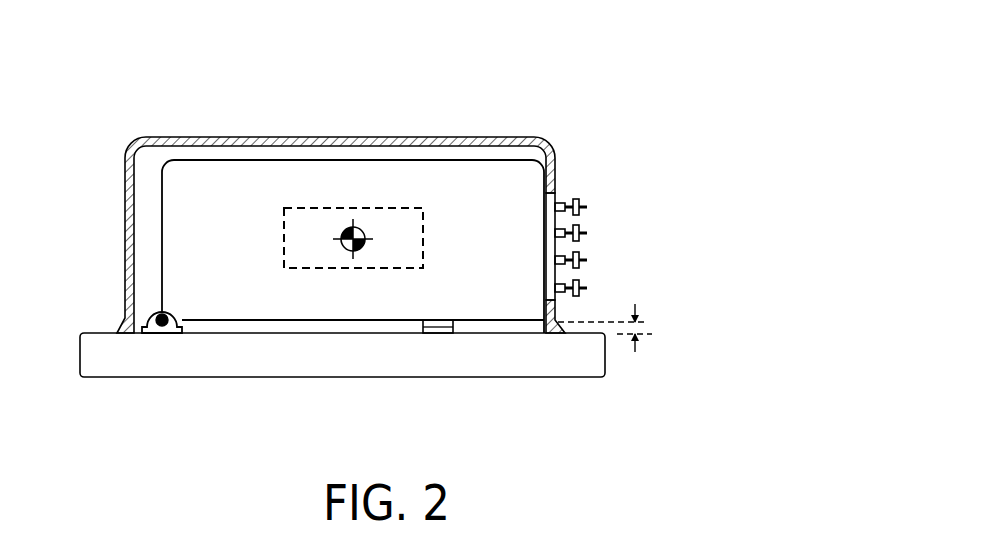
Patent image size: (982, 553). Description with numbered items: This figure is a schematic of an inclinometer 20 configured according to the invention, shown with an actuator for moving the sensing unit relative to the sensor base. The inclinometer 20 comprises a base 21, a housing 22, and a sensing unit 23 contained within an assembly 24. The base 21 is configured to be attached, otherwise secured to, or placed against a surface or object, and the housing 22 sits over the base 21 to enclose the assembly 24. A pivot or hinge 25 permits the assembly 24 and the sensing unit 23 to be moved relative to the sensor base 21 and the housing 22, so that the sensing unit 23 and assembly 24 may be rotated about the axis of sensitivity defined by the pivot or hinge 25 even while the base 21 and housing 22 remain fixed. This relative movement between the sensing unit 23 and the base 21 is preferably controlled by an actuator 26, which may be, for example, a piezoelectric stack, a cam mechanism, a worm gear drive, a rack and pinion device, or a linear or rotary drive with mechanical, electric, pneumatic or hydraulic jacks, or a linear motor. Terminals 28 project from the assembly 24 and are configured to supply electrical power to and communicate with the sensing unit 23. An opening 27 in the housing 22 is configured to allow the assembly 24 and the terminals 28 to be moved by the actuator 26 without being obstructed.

The inclinometer 20 is at (676, 58).
The base 21 is at (584, 355).
The housing 22 is at (130, 146).
The sensing unit 23 is at (388, 208).
The assembly 24 is at (493, 176).
The pivot or hinge 25 is at (345, 232).
The actuator 26 is at (452, 338).
The opening 27 is at (557, 192).
The terminals 28 is at (590, 246).